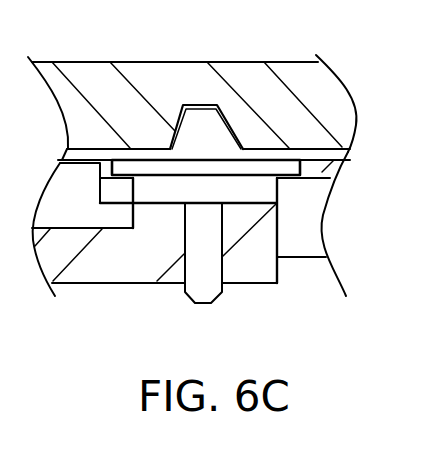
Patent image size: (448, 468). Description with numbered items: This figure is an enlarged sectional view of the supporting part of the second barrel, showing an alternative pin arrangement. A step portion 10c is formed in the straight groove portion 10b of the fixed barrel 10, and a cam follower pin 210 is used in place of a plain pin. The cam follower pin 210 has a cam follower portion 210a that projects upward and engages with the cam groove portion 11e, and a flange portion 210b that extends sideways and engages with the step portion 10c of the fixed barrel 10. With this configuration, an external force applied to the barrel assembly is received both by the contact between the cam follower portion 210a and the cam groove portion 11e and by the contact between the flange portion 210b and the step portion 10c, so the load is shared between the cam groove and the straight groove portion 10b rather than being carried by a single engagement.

The fixed barrel 10 is at (293, 258).
The straight groove portion 10b is at (310, 218).
The step portion 10c is at (353, 136).
The cam groove portion 11e is at (178, 123).
The cam follower pin 210 is at (184, 292).
The cam follower portion 210a is at (212, 127).
The flange portion 210b is at (139, 167).